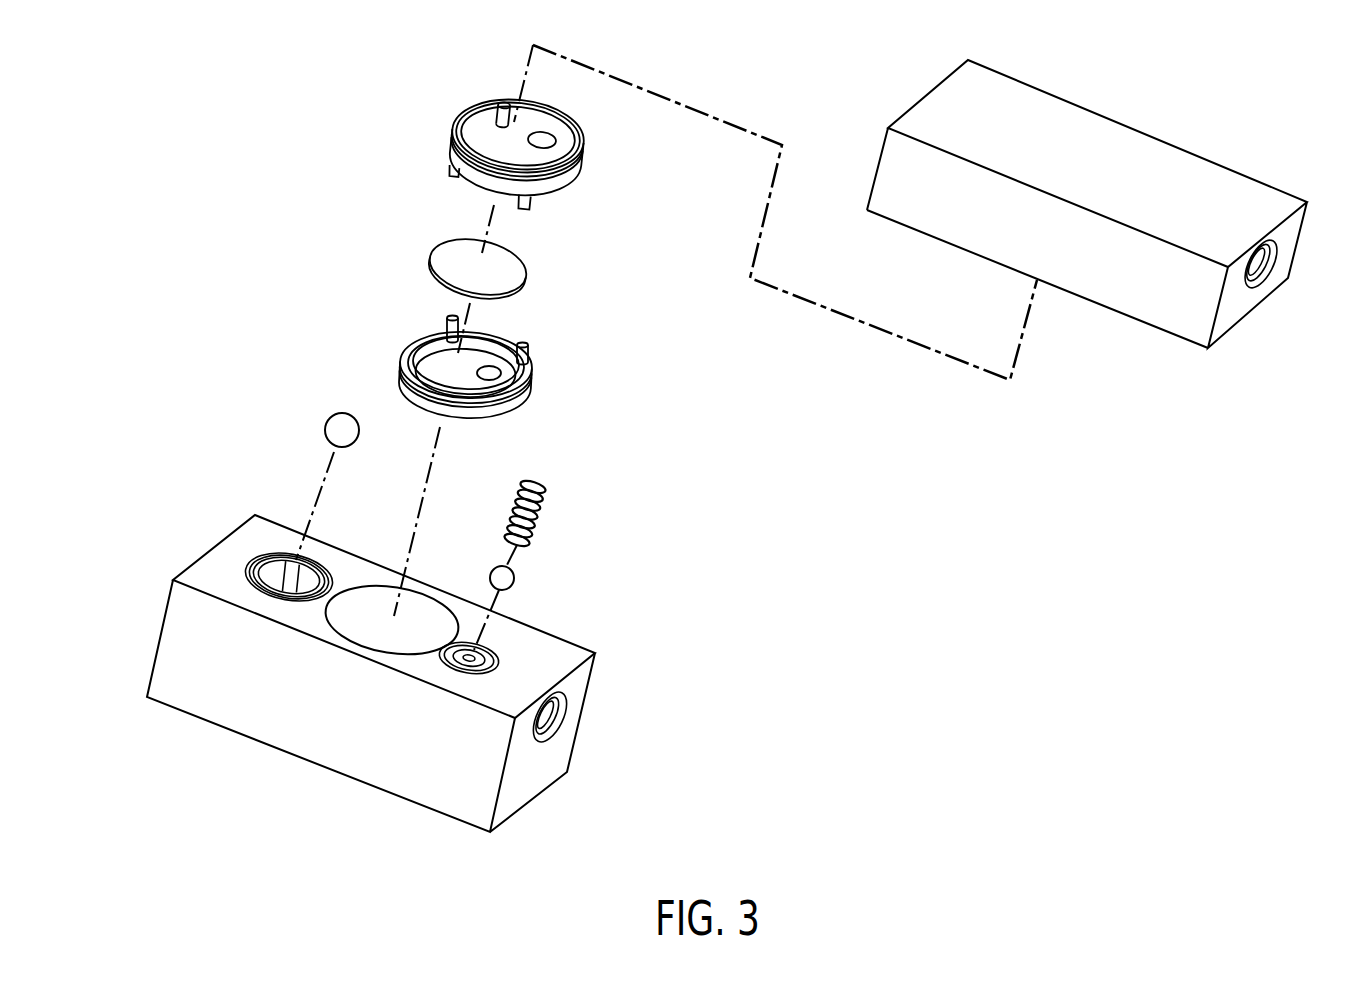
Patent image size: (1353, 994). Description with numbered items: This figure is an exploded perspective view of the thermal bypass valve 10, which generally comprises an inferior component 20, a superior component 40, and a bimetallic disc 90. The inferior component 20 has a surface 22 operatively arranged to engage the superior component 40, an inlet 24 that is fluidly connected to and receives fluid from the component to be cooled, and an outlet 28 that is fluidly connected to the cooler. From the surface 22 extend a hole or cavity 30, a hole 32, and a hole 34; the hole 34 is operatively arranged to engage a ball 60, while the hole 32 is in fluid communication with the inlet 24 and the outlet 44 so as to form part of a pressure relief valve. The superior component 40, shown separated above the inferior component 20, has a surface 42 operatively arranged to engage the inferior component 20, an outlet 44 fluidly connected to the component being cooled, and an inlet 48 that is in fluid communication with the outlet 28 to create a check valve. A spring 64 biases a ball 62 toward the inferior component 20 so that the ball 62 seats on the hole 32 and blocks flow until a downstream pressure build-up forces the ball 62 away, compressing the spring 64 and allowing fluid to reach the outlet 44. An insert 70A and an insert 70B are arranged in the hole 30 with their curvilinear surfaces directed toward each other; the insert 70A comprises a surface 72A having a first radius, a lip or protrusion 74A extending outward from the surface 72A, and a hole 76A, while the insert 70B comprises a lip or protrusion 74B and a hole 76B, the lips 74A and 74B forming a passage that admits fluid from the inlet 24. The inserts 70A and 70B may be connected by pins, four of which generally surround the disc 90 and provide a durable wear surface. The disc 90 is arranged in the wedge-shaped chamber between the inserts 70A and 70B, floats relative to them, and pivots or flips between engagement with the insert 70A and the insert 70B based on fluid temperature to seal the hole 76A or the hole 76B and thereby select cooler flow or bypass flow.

The thermal bypass valve 10 is at (557, 438).
The inferior component 20 is at (380, 653).
The surface 22 is at (212, 571).
The inlet 24 is at (556, 732).
The outlet 28 is at (345, 653).
The hole or cavity 30 is at (387, 587).
The hole 32 is at (472, 657).
The hole 34 is at (268, 560).
The superior component 40 is at (1097, 215).
The surface 42 is at (1075, 298).
The outlet 44 is at (1270, 276).
The inlet 48 is at (1068, 192).
The ball 60 is at (325, 428).
The ball 62 is at (514, 574).
The spring 64 is at (538, 517).
The insert 70A is at (490, 368).
The insert 70B is at (490, 169).
The surface 72A is at (432, 352).
The lip or protrusion 74A is at (528, 382).
The lip or protrusion 74B is at (562, 186).
The hole 76A is at (478, 368).
The hole 76B is at (546, 141).
The bimetallic disc 90 is at (524, 278).